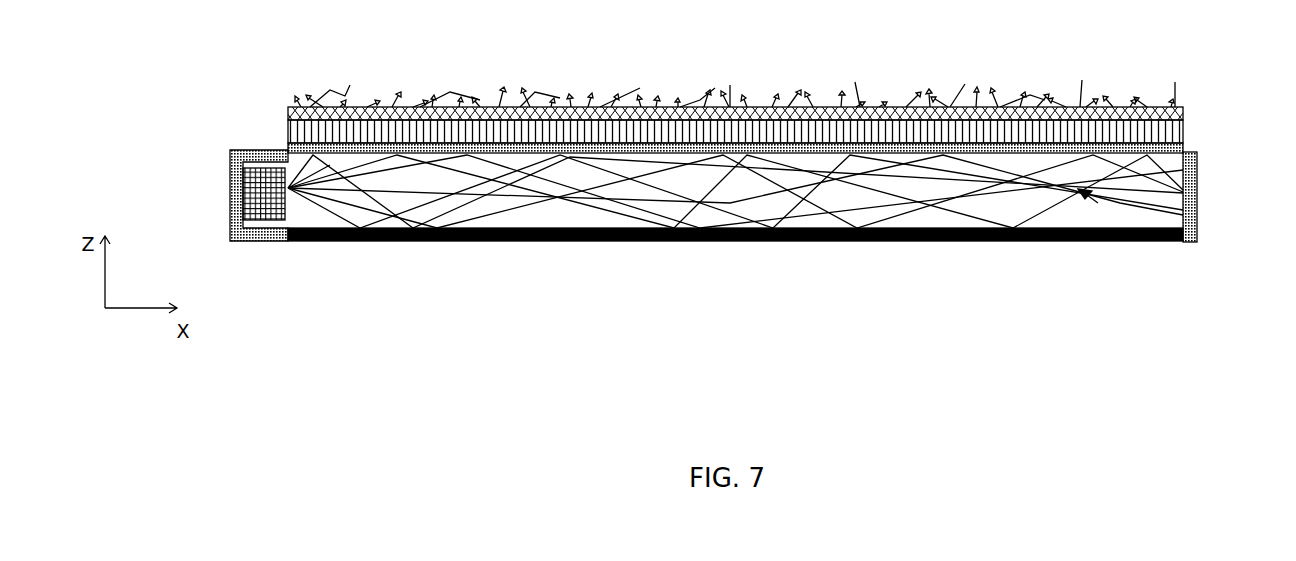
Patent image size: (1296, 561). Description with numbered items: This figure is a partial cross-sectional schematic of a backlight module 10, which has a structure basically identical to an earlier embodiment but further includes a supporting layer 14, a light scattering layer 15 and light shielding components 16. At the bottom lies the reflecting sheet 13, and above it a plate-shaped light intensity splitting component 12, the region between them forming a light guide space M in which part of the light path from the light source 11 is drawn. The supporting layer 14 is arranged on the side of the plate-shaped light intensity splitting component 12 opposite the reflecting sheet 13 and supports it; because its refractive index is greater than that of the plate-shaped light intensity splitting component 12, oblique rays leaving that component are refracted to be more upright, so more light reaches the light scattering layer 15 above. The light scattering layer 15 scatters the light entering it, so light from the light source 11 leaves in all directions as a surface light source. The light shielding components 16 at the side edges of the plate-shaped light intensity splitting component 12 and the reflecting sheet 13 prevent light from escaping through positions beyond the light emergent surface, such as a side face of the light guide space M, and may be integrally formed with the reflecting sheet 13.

The backlight module 10 is at (185, 44).
The light source 11 is at (262, 222).
The plate-shaped light intensity splitting component 12 is at (1183, 143).
The reflecting sheet 13 is at (438, 242).
The supporting layer 14 is at (297, 130).
The light scattering layer 15 is at (288, 106).
The light shielding component 16 is at (1262, 150).
The light guide space M is at (1190, 220).